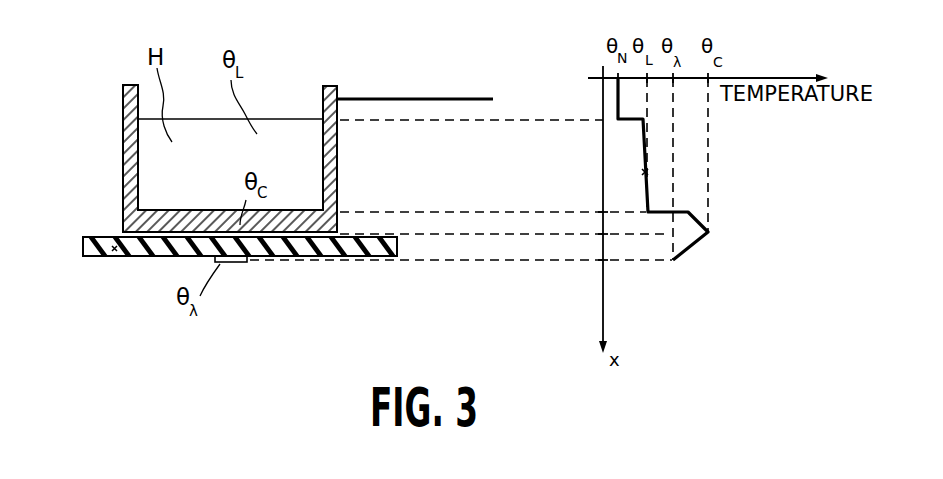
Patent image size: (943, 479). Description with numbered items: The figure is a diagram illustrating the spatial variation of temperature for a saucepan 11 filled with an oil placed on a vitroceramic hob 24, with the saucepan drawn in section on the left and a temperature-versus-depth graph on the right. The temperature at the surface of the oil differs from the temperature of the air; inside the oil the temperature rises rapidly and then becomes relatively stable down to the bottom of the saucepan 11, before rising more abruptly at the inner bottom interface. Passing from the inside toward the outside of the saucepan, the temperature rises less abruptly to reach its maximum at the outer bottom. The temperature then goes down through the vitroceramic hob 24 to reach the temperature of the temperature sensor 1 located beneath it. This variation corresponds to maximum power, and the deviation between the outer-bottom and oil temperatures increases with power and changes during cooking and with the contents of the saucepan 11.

The saucepan 11 is at (124, 150).
The vitroceramic hob 24 is at (110, 257).
The temperature sensor 1 is at (244, 264).